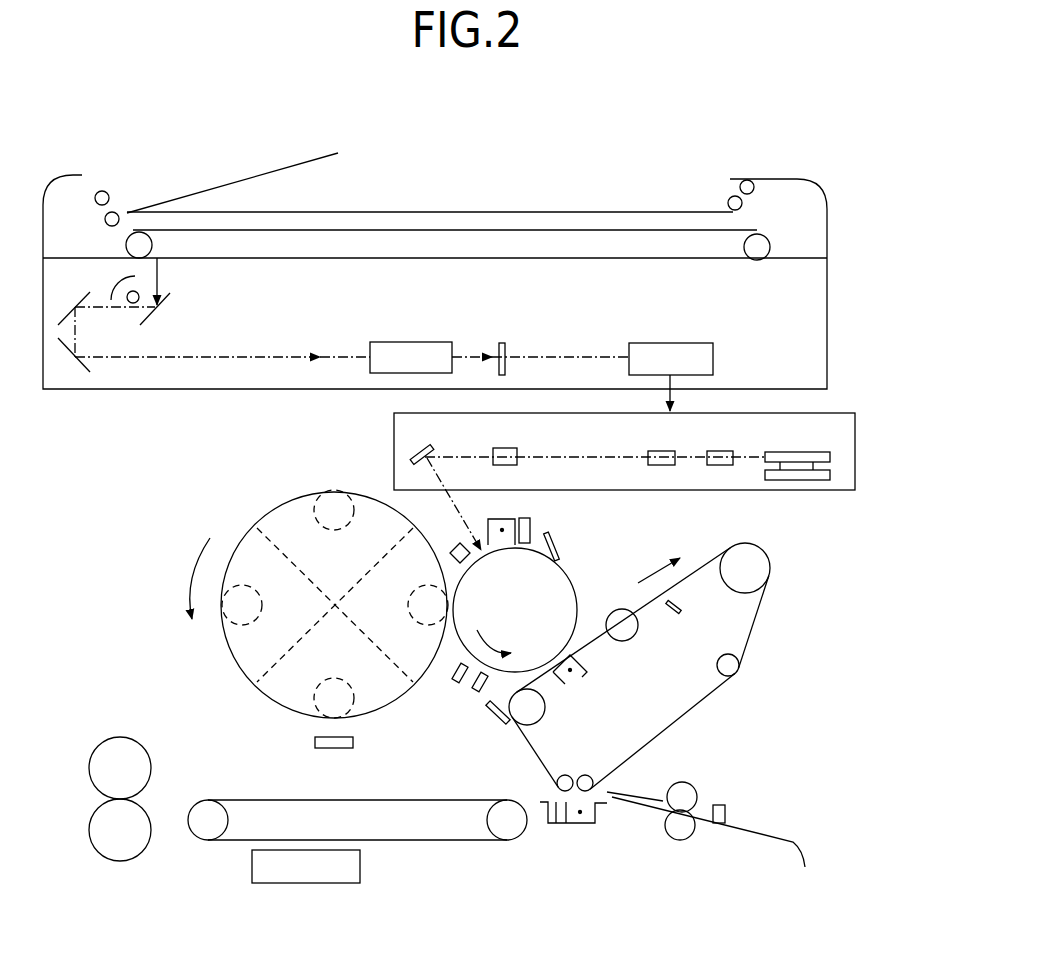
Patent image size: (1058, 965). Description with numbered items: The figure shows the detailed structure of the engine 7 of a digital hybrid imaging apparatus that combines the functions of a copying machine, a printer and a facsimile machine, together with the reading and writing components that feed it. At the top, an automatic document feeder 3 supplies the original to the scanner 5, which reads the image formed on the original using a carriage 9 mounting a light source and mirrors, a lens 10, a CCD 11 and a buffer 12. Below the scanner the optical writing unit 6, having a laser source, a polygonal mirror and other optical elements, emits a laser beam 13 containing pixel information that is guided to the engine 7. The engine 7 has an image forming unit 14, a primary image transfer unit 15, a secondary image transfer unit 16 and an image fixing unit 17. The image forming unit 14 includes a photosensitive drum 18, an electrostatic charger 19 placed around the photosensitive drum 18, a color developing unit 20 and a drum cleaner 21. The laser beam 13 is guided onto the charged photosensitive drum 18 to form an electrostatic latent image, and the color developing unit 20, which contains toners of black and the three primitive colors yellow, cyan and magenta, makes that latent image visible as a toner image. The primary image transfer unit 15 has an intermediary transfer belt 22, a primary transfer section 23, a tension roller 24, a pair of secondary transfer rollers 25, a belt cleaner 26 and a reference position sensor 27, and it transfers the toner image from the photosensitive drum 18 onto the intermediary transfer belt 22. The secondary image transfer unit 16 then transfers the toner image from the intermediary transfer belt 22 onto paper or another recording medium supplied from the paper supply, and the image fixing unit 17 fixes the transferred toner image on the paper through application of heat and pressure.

The automatic document feeder 3 is at (522, 190).
The scanner 5 is at (161, 392).
The optical writing unit 6 is at (868, 433).
The engine 7 is at (238, 519).
The carriage 9 is at (181, 308).
The lens 10 is at (417, 342).
The CCD 11 is at (507, 343).
The buffer 12 is at (640, 343).
The laser beam 13 is at (452, 503).
The image forming unit 14 is at (606, 591).
The primary image transfer unit 15 is at (774, 640).
The secondary image transfer unit 16 is at (621, 846).
The image fixing unit 17 is at (121, 727).
The photosensitive drum 18 is at (578, 600).
The electrostatic charger 19 is at (510, 517).
The color developing unit 20 is at (240, 675).
The drum cleaner 21 is at (558, 547).
The intermediary transfer belt 22 is at (702, 700).
The primary transfer section 23 is at (583, 677).
The tension roller 24 is at (639, 632).
The secondary transfer rollers 25 is at (565, 775).
The belt cleaner 26 is at (493, 718).
The reference position sensor 27 is at (683, 608).